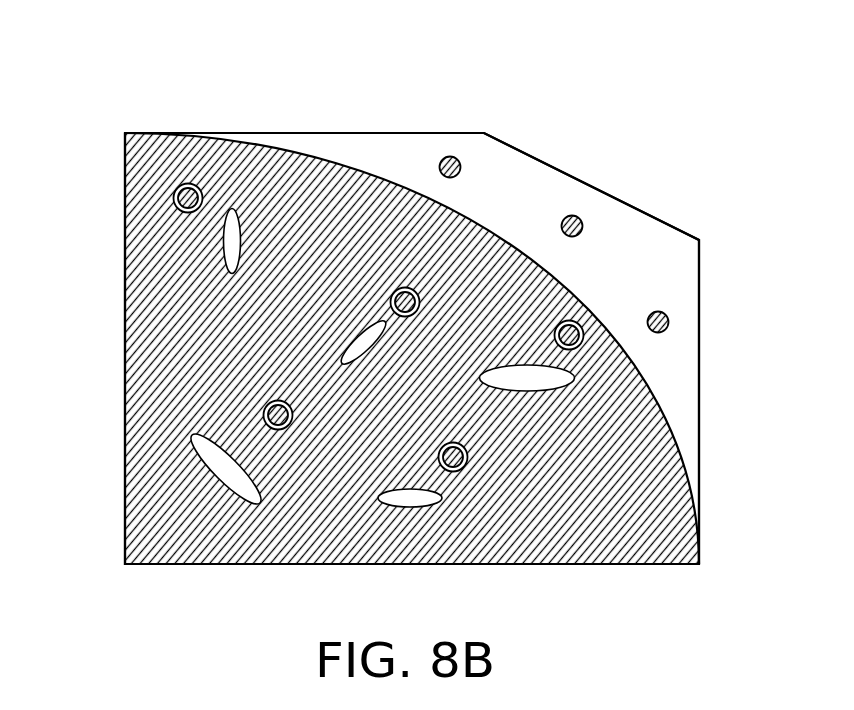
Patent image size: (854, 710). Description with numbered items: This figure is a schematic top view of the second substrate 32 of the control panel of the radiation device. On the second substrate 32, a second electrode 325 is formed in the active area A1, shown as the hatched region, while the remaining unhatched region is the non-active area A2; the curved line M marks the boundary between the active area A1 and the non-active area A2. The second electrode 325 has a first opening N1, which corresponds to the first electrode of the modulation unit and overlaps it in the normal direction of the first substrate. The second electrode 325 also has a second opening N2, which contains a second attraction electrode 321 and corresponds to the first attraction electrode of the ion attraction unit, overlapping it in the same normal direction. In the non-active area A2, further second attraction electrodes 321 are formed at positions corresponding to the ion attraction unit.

The second substrate 32 is at (68, 48).
The second attraction electrode 321 is at (188, 183).
The second electrode 325 is at (138, 342).
The first opening N1 is at (223, 245).
The second opening N2 is at (263, 417).
The active area A1 is at (638, 565).
The non-active area A2 is at (687, 347).
The boundary line M is at (660, 408).